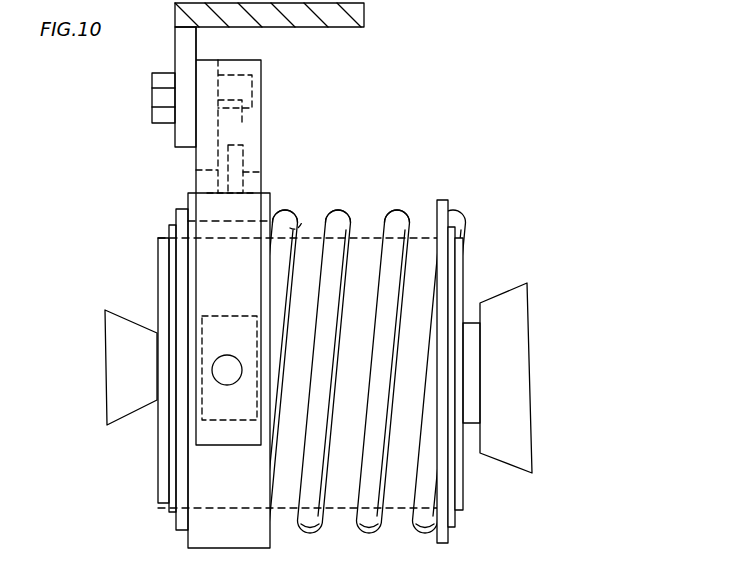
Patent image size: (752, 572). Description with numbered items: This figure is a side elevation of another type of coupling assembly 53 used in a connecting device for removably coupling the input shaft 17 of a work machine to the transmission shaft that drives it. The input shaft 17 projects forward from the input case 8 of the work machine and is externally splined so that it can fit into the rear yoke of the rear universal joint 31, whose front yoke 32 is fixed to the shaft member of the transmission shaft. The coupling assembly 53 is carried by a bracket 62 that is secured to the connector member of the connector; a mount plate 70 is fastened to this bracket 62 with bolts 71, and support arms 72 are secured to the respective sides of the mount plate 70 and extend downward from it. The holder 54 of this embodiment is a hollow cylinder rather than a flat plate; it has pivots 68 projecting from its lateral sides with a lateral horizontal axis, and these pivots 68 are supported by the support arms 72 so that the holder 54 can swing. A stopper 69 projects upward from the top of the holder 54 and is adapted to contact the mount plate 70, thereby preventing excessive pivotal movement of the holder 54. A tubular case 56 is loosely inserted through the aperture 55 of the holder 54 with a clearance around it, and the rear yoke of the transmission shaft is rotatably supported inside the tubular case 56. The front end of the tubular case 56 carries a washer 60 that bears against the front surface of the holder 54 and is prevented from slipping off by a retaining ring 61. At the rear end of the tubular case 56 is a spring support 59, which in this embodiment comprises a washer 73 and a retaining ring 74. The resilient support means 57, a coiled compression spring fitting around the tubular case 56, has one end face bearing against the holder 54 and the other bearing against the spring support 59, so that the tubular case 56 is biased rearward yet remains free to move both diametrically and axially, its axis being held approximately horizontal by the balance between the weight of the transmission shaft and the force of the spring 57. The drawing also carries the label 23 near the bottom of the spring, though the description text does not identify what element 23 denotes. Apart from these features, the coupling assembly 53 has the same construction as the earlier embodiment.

The input case 8 is at (510, 331).
The input shaft 17 is at (470, 407).
The coil spring 23 is at (323, 566).
The rear universal joint 31 is at (100, 388).
The front yoke 32 is at (138, 405).
The coupling assembly 53 is at (378, 32).
The holder 54 is at (178, 525).
The aperture 55 is at (290, 217).
The tubular case 56 is at (358, 252).
The resilient support means 57 is at (396, 216).
The spring support 59 is at (483, 355).
The washer 60 is at (184, 210).
The retaining ring 61 is at (172, 226).
The bracket 62 is at (291, 21).
The pivots 68 is at (230, 355).
The stopper 69 is at (262, 172).
The mount plate 70 is at (222, 72).
The bolts 71 is at (152, 97).
The support arms 72 is at (196, 483).
The washer 73 is at (446, 206).
The retaining ring 74 is at (452, 233).